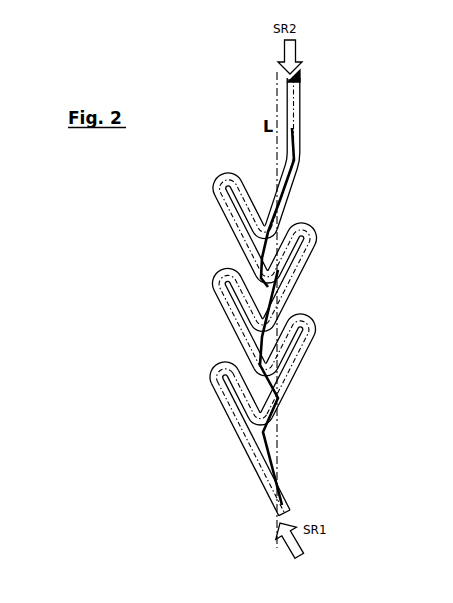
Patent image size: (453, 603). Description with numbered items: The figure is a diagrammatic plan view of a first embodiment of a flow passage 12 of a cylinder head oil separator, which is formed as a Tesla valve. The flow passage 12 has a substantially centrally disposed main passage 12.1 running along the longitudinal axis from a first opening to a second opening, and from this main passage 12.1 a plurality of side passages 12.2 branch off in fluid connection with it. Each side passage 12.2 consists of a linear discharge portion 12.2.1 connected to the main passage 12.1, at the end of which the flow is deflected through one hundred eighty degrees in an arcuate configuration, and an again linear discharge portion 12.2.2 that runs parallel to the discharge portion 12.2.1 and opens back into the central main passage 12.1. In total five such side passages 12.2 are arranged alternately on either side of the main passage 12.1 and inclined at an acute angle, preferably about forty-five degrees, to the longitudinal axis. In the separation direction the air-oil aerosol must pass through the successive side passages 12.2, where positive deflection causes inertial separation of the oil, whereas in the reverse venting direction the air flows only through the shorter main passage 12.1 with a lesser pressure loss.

The flow passage 12 is at (259, 309).
The central main passage 12.1 is at (283, 202).
The side passage 12.2 is at (264, 439).
The discharge portion 12.2.1 is at (247, 432).
The discharge portion 12.2.2 is at (245, 397).